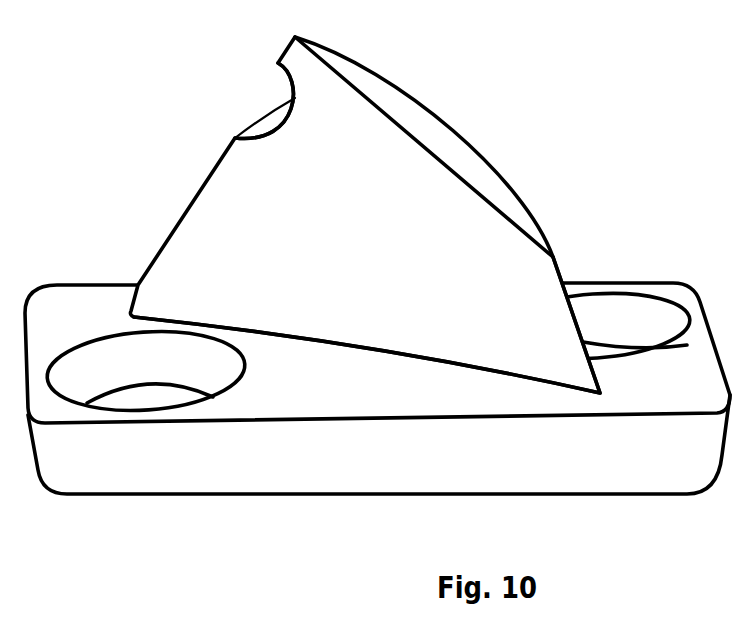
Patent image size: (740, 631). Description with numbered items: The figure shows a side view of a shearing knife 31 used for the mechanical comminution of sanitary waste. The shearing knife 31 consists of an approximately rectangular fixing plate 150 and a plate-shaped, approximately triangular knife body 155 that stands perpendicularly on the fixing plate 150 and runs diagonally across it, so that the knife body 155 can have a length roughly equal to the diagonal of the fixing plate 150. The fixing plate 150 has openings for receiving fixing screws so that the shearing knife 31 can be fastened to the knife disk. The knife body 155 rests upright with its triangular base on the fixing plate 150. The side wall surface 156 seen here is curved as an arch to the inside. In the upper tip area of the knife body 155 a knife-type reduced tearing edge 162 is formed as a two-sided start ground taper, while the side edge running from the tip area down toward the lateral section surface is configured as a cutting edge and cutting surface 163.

The shearing knife 31 is at (120, 267).
The fixing plate 150 is at (327, 453).
The knife body 155 is at (477, 147).
The side wall surface 156 is at (412, 247).
The reduced tearing edge 162 is at (267, 117).
The cutting edge and cutting surface 163 is at (427, 118).